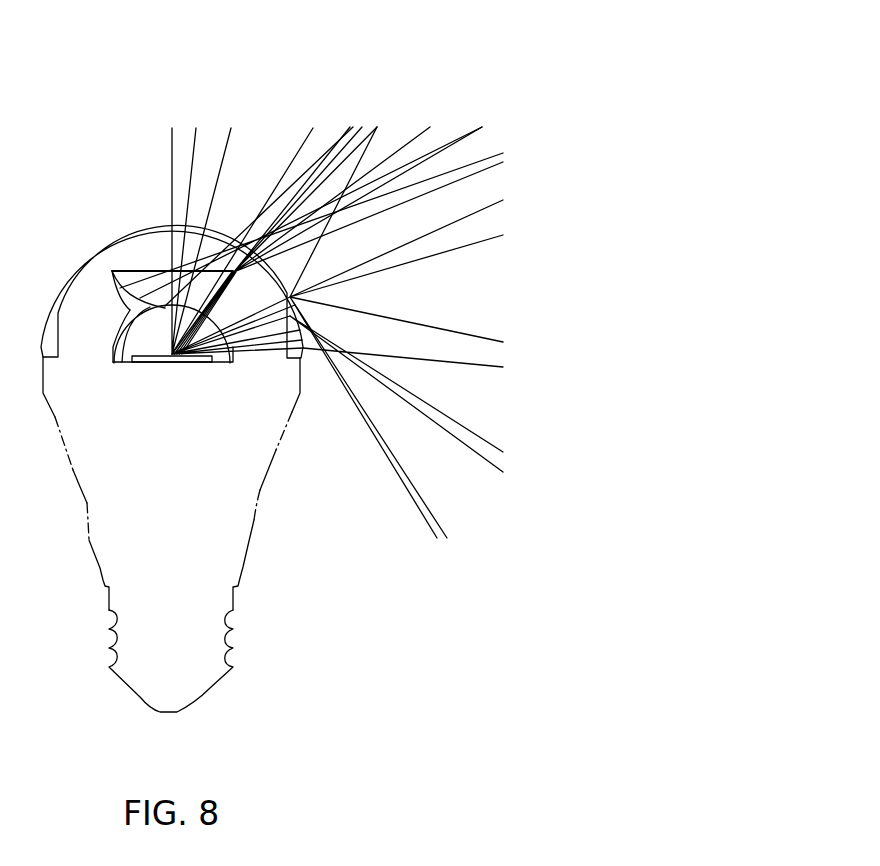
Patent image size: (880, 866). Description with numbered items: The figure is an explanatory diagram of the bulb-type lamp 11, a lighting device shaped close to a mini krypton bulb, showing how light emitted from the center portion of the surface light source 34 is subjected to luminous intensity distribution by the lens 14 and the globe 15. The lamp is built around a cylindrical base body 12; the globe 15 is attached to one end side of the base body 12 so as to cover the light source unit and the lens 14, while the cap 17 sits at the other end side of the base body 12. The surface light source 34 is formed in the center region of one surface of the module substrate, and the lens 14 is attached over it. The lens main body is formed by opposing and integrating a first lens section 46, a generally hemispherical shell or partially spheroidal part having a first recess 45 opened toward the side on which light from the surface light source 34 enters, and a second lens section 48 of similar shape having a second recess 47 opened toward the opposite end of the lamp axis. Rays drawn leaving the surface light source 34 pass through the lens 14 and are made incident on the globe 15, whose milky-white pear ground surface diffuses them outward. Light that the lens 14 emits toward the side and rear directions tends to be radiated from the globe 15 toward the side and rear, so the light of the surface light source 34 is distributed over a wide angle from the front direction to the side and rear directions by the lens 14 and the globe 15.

The bulb-type lamp 11 is at (78, 541).
The base body 12 is at (72, 472).
The lens 14 is at (228, 366).
The globe 15 is at (65, 280).
The cap 17 is at (145, 703).
The surface light source 34 is at (177, 359).
The first recess 45 is at (125, 357).
The first lens section 46 is at (108, 342).
The second recess 47 is at (125, 270).
The second lens section 48 is at (115, 295).